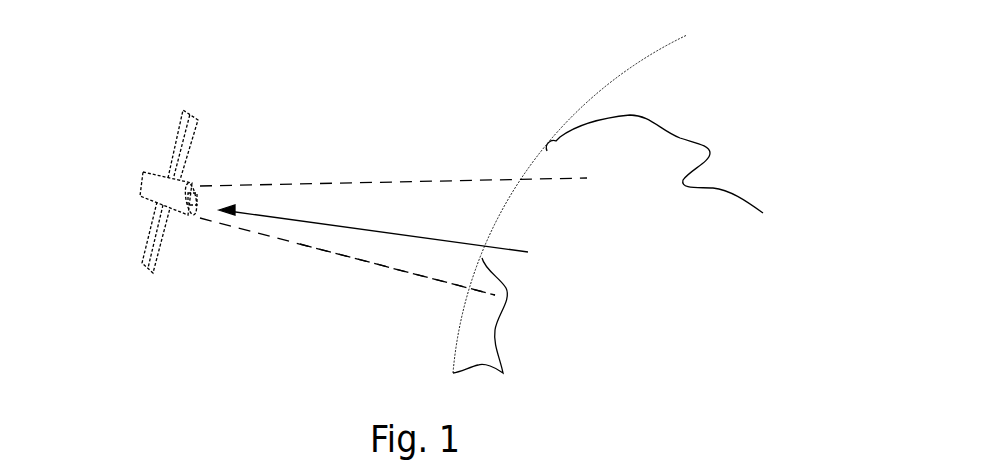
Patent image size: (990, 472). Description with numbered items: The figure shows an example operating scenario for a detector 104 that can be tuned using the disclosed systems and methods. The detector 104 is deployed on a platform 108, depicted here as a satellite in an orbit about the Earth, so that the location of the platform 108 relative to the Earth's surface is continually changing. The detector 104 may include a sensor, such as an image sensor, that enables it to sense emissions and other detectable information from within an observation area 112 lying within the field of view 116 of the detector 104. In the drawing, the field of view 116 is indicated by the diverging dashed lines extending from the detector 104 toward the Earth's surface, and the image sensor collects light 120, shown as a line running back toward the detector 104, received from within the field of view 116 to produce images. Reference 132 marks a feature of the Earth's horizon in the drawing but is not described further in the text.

The detector 104 is at (198, 200).
The platform 108 is at (146, 187).
The observation area 112 is at (420, 280).
The field of view 116 is at (290, 244).
The light 120 is at (413, 235).
The Earth horizon 132 is at (610, 107).